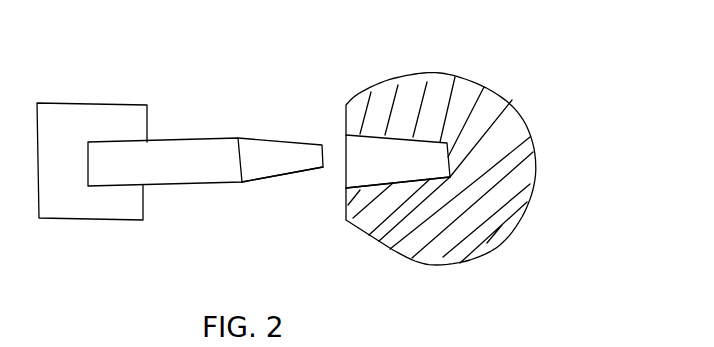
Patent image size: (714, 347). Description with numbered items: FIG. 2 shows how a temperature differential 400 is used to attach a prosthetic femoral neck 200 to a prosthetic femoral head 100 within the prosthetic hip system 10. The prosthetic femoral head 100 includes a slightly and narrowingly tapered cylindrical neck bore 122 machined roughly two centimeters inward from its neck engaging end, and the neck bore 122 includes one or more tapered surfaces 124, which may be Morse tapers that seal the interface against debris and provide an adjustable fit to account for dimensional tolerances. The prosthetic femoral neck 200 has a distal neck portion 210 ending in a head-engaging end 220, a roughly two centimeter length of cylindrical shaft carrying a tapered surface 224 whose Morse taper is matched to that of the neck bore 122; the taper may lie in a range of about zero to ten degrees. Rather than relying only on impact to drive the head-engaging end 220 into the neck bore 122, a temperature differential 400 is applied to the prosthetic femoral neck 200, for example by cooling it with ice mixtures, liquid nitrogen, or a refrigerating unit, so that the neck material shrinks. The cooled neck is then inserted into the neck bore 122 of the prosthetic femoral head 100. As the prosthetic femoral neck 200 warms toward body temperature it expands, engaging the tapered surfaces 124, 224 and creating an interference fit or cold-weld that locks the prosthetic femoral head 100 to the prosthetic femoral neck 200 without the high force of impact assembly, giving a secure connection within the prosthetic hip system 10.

The prosthetic hip system 10 is at (626, 55).
The prosthetic femoral head 100 is at (500, 101).
The neck bore 122 is at (362, 147).
The tapered surface 124 is at (383, 172).
The prosthetic femoral neck 200 is at (205, 173).
The distal neck portion 210 is at (270, 66).
The head-engaging end 220 is at (270, 148).
The tapered surface 224 is at (283, 182).
The temperature differential 400 is at (72, 172).